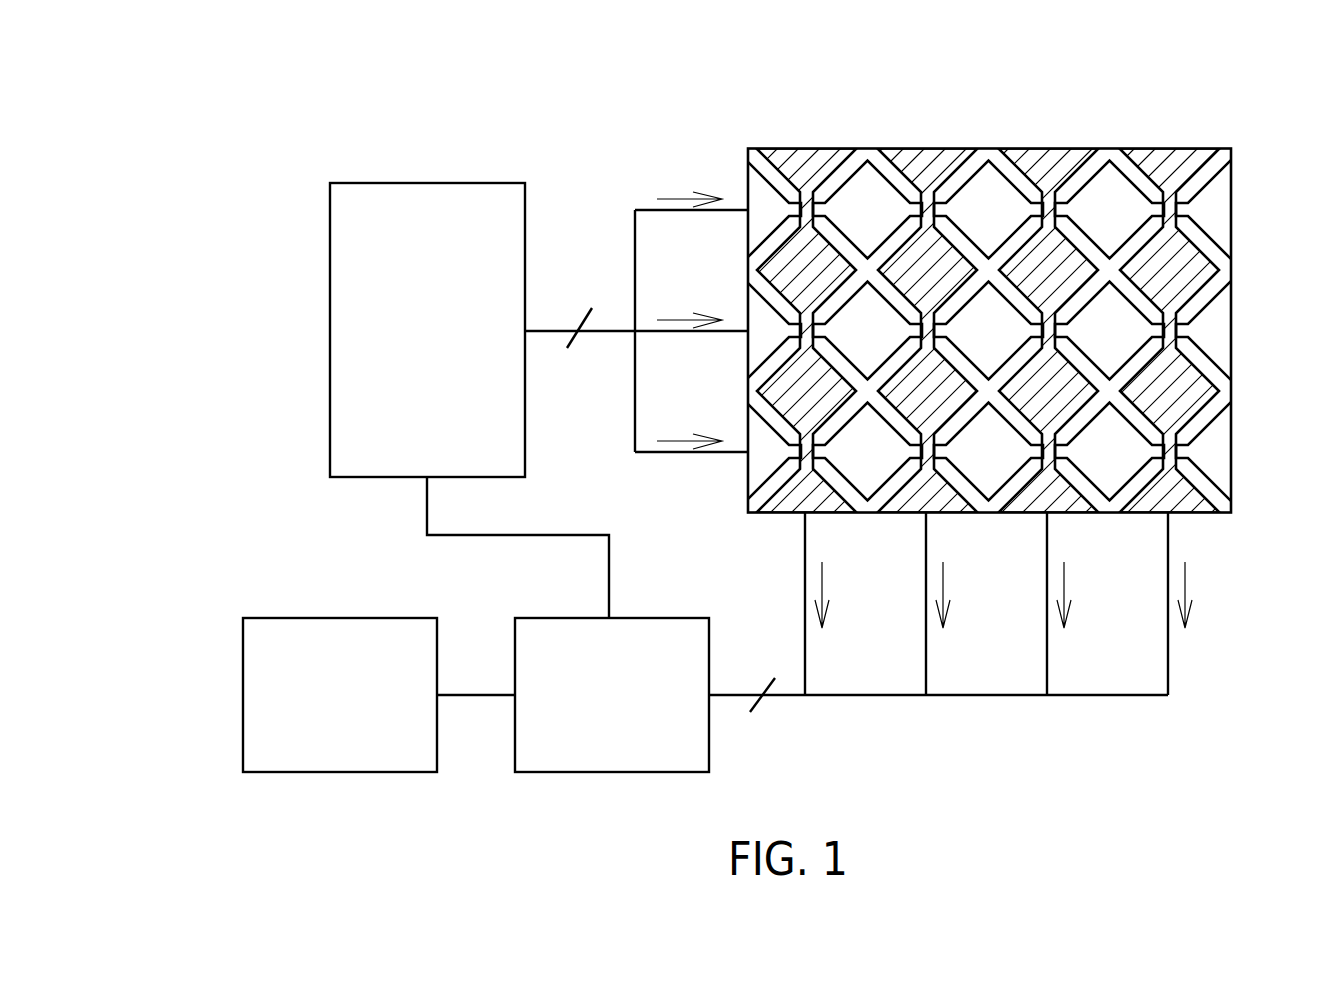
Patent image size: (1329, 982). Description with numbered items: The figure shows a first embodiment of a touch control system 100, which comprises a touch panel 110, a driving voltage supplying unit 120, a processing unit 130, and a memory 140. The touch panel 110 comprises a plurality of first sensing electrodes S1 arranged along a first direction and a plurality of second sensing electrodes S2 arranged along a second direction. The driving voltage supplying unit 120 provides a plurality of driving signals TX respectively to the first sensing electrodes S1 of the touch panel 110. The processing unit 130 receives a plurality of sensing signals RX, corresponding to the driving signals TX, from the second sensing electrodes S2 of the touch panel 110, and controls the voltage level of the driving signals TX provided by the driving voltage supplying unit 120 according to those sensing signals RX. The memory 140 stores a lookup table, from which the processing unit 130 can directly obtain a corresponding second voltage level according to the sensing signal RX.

The touch control system 100 is at (313, 105).
The touch panel 110 is at (940, 126).
The driving voltage supplying unit 120 is at (441, 338).
The processing unit 130 is at (626, 720).
The memory 140 is at (353, 720).
The first sensing electrodes S1 is at (1217, 207).
The second sensing electrodes S2 is at (1167, 160).